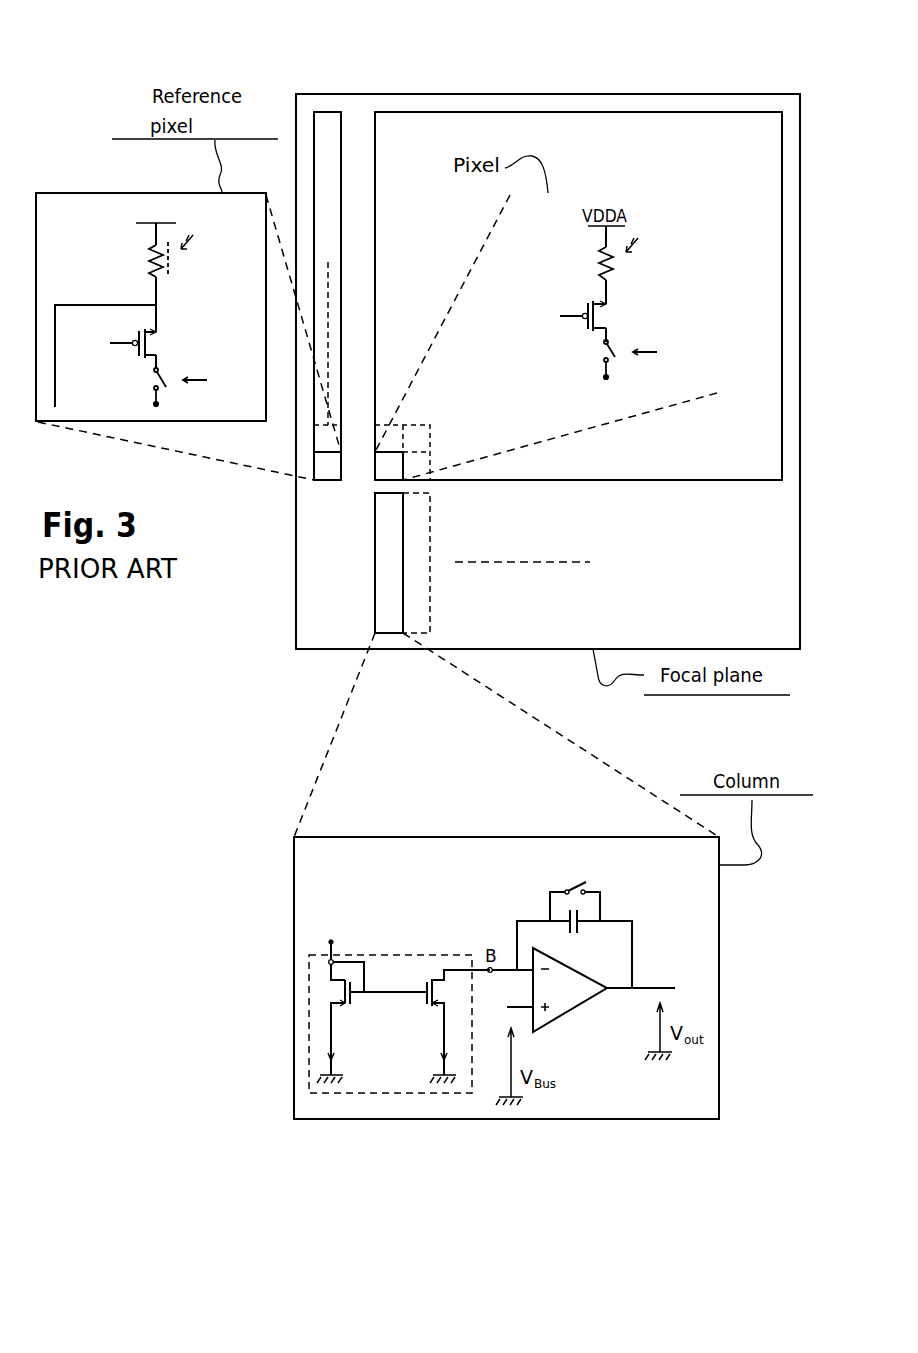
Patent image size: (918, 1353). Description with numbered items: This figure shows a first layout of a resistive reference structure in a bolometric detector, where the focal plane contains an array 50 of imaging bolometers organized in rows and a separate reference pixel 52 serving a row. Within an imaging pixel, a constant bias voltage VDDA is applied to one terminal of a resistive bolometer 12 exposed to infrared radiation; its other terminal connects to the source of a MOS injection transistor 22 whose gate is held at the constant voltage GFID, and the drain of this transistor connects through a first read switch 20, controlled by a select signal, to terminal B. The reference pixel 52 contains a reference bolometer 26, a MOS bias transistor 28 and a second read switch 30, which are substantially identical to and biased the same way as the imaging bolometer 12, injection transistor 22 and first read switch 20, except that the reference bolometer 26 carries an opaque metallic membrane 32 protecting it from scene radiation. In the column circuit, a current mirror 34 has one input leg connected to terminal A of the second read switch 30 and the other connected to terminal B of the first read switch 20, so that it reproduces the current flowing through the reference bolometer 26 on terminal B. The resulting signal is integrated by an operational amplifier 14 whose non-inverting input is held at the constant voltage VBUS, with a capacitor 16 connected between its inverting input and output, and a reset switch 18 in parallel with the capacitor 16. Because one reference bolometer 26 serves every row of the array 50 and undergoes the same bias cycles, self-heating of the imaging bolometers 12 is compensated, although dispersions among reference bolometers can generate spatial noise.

The array of imaging bolometers 50 is at (663, 113).
The reference pixel 52 is at (95, 192).
The reference bolometer 26 is at (146, 262).
The opaque metallic membrane 32 is at (170, 272).
The MOS bias transistor 28 is at (153, 343).
The second read switch 30 is at (148, 375).
The resistive bolometer 12 is at (613, 268).
The MOS injection transistor 22 is at (588, 307).
The first read switch 20 is at (601, 350).
The current mirror 34 is at (362, 1093).
The operational amplifier 14 is at (580, 1005).
The capacitor 16 is at (590, 925).
The reset switch 18 is at (594, 884).